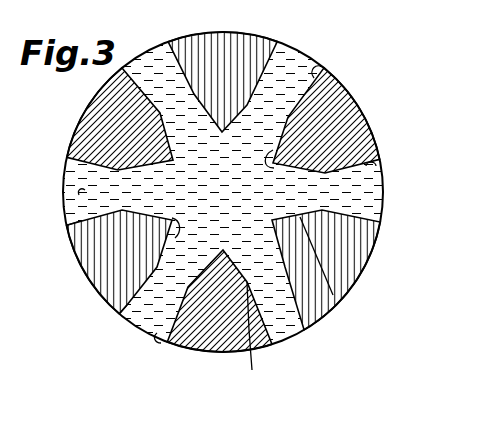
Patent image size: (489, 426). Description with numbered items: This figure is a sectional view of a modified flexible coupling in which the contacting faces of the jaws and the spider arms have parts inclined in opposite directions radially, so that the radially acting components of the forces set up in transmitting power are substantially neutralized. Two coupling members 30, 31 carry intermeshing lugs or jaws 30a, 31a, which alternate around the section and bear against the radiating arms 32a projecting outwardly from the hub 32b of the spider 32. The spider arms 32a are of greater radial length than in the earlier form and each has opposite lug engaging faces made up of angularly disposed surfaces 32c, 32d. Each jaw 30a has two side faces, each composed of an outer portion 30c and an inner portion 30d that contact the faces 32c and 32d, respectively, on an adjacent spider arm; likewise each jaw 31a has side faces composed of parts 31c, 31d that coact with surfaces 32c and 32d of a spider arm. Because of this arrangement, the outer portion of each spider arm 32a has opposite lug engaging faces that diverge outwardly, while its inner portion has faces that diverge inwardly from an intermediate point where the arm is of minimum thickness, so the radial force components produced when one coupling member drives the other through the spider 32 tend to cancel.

The coupling member 30 is at (77, 263).
The lug or jaw 30a is at (227, 43).
The outer portion of side face 30c is at (127, 313).
The inner portion of side face 30d is at (165, 222).
The coupling member 31 is at (345, 115).
The lug or jaw 31a is at (103, 113).
The side face part 31c is at (319, 71).
The side face part 31d is at (296, 170).
The spider 32 is at (223, 192).
The radiating arm 32a is at (152, 60).
The hub 32b is at (243, 198).
The angularly disposed surface 32c is at (338, 318).
The angularly disposed surface 32d is at (333, 295).